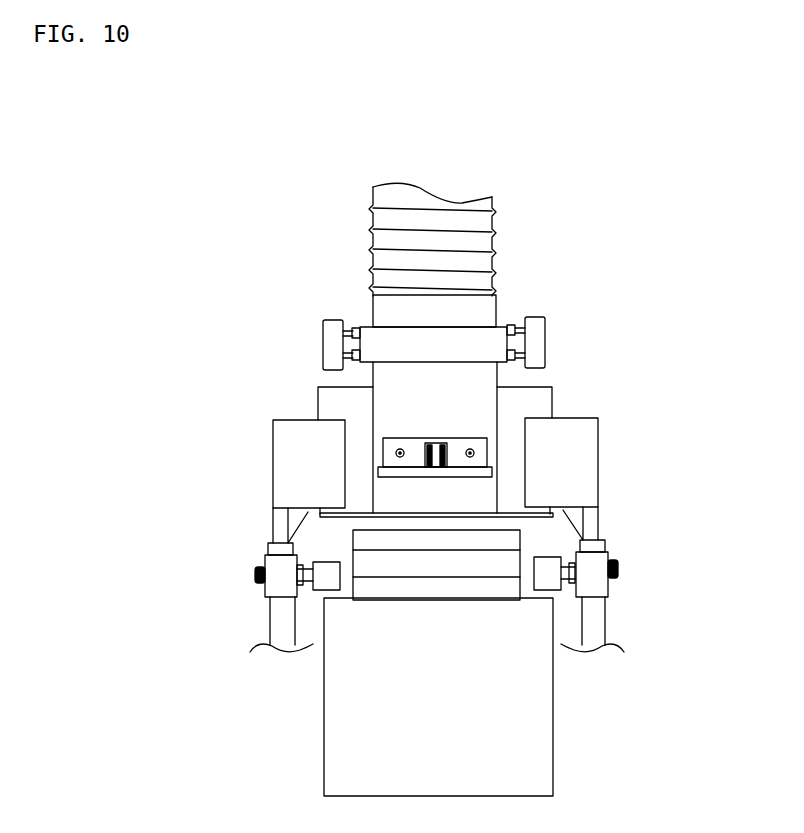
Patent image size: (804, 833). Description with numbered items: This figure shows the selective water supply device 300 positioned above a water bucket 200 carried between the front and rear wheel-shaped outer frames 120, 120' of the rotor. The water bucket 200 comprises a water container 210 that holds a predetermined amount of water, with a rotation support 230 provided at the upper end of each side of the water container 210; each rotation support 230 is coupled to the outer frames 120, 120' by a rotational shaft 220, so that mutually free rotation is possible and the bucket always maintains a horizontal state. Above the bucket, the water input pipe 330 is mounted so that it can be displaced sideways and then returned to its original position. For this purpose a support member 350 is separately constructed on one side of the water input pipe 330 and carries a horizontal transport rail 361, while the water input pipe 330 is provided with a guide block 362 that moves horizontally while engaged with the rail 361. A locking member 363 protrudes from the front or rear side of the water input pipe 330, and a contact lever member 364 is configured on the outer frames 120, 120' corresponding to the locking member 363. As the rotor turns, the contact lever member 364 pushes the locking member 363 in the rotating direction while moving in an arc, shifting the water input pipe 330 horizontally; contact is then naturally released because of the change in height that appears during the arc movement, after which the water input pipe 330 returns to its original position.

The selective water supply device 300 is at (562, 200).
The water input pipe 330 is at (487, 311).
The support member 350 is at (327, 340).
The horizontal transport rail 361 is at (357, 345).
The guide block 362 is at (358, 330).
The locking member 363 is at (545, 401).
The contact lever member 364 is at (588, 452).
The rotation support 230 is at (553, 555).
The rotational shaft 220 is at (618, 570).
The front wheel-shaped outer frame 120 is at (261, 597).
The rear wheel-shaped outer frame 120' is at (620, 596).
The water bucket 200 is at (280, 746).
The water container 210 is at (555, 740).